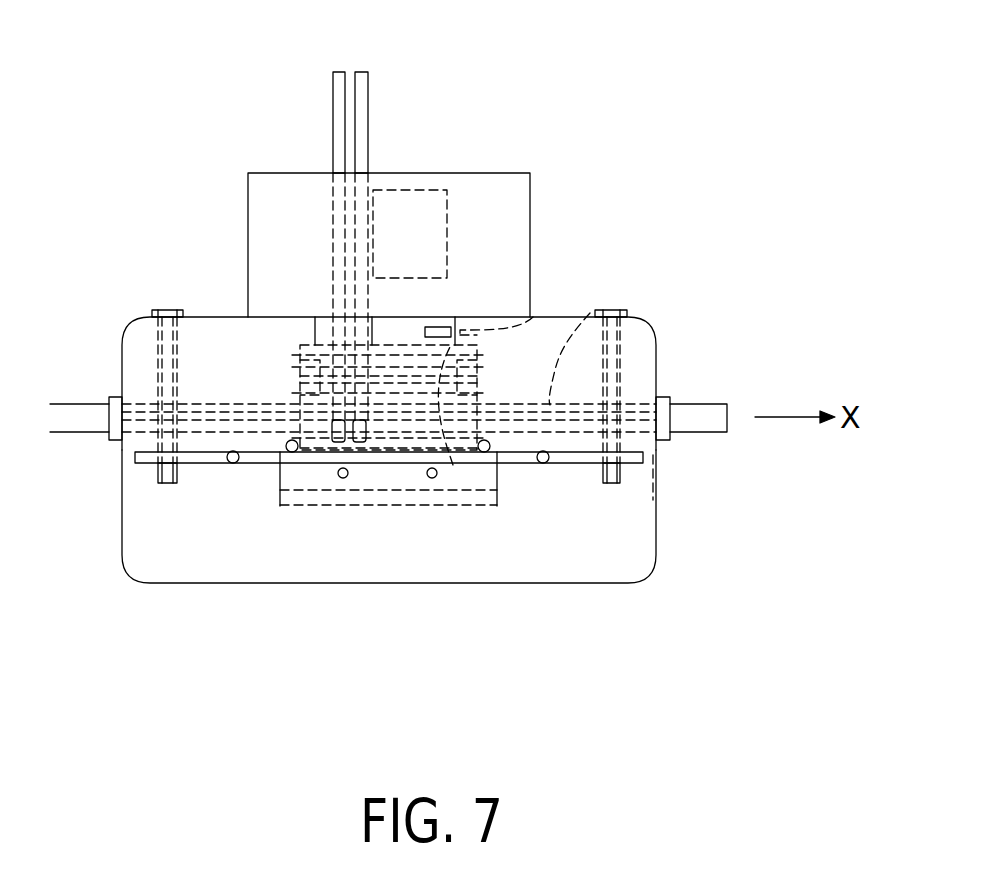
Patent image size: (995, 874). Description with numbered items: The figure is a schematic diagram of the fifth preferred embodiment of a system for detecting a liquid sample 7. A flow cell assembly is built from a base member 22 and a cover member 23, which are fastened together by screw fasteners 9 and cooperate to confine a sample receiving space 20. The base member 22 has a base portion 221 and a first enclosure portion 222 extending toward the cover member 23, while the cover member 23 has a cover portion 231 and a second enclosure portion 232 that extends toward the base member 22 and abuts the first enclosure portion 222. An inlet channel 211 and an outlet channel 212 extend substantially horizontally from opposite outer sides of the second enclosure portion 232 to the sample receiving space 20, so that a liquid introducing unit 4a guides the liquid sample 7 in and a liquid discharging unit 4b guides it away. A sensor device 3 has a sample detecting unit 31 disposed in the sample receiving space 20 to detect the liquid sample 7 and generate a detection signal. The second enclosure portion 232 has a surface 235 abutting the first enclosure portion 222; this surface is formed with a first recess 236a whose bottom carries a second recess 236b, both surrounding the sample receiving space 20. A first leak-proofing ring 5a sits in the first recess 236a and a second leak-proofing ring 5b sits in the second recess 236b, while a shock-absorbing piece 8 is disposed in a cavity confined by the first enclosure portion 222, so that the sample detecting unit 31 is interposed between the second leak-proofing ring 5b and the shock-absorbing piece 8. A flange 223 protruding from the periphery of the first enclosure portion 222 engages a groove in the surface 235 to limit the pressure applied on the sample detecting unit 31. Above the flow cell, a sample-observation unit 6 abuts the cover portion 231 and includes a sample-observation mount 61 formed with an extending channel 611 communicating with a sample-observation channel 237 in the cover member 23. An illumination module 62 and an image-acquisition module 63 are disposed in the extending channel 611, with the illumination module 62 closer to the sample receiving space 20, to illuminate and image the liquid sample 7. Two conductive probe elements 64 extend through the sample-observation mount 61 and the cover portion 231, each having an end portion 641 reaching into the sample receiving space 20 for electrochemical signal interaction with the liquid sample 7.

The sensor device 3 is at (388, 500).
The sample detecting unit 31 is at (393, 497).
The liquid introducing unit 4a is at (71, 438).
The liquid discharging unit 4b is at (703, 439).
The first leak-proofing ring 5a is at (233, 463).
The second leak-proofing ring 5b is at (280, 465).
The sample-observation unit 6 is at (342, 216).
The sample-observation mount 61 is at (262, 237).
The illumination module 62 is at (438, 327).
The image-acquisition module 63 is at (433, 233).
The conductive probe elements 64 is at (360, 135).
The extending channel 611 is at (432, 173).
The end portion 641 is at (362, 453).
The liquid sample 7 is at (583, 465).
The shock-absorbing piece 8 is at (282, 505).
The screw fasteners 9 is at (160, 310).
The sample receiving space 20 is at (300, 384).
The base member 22 is at (446, 602).
The first enclosure portion 222 is at (623, 547).
The cover member 23 is at (496, 383).
The second enclosure portion 232 is at (645, 362).
The inlet channel 211 is at (205, 442).
The outlet channel 212 is at (590, 313).
The base portion 221 is at (468, 557).
The flange 223 is at (653, 485).
The cover portion 231 is at (533, 317).
The surface 235 is at (597, 465).
The first recess 236a is at (580, 458).
The second recess 236b is at (517, 470).
The sample-observation channel 237 is at (453, 465).